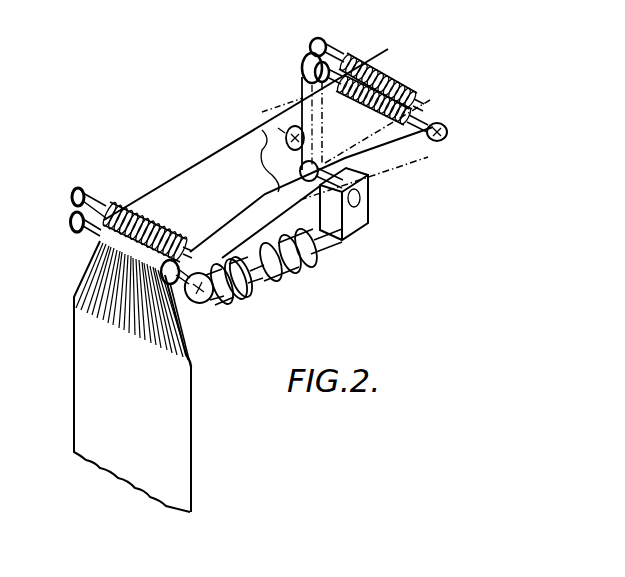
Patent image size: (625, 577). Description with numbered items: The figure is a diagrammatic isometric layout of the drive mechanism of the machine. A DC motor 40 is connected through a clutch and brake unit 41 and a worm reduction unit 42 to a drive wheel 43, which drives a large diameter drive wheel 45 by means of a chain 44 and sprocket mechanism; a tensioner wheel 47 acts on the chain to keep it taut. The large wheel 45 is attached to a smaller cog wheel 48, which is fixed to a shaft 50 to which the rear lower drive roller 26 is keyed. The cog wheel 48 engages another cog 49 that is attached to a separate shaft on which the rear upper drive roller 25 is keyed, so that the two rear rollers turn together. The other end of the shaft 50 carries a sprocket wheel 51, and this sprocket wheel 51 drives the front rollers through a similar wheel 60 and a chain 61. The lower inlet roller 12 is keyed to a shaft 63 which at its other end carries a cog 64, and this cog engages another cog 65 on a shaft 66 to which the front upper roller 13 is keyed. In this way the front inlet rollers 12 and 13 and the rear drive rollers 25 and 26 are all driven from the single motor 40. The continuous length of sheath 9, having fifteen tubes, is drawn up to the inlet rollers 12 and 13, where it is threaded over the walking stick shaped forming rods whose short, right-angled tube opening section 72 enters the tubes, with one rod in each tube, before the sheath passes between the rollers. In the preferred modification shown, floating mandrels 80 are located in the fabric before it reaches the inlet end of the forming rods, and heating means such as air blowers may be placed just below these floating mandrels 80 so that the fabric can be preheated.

The sheath 9 is at (180, 466).
The lower inlet roller 12 is at (168, 306).
The upper inlet roller 13 is at (150, 220).
The rear upper drive roller 25 is at (397, 80).
The rear lower drive roller 26 is at (388, 85).
The DC motor 40 is at (262, 300).
The clutch and brake unit 41 is at (318, 262).
The worm reduction unit 42 is at (362, 228).
The drive wheel 43 is at (283, 186).
The chain 44 is at (266, 109).
The large diameter drive wheel 45 is at (302, 62).
The tensioner wheel 47 is at (287, 143).
The cog wheel 48 is at (313, 80).
The cog 49 is at (312, 38).
The shaft 50 is at (432, 120).
The sprocket wheel 51 is at (447, 137).
The sprocket wheel 60 is at (208, 303).
The chain 61 is at (427, 160).
The shaft 63 is at (192, 262).
The cog 64 is at (76, 233).
The cog 65 is at (80, 188).
The shaft 66 is at (92, 192).
The tube opening section 72 is at (78, 272).
The floating mandrels 80 is at (185, 358).